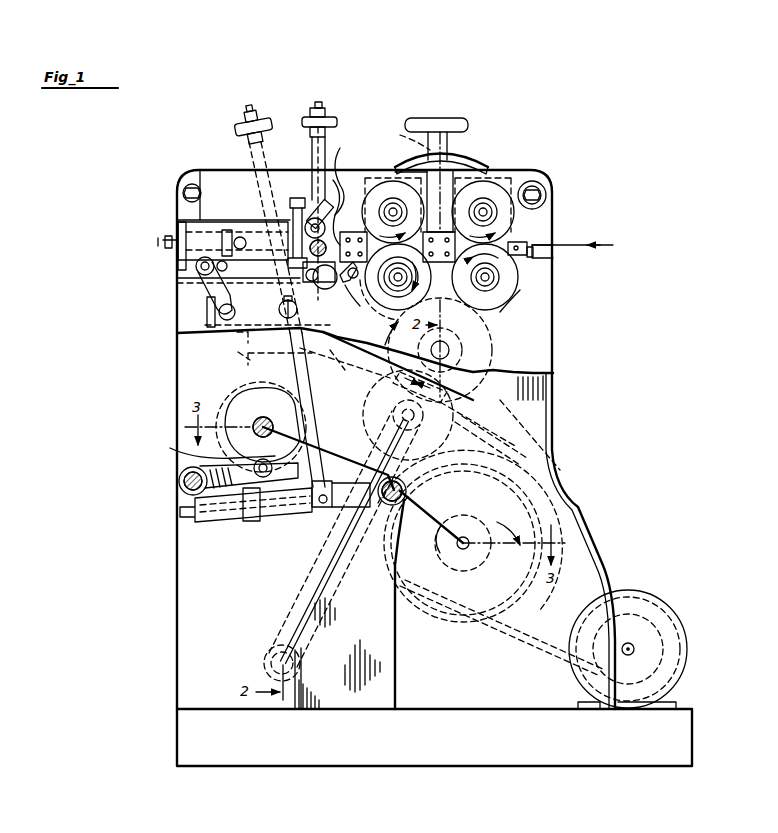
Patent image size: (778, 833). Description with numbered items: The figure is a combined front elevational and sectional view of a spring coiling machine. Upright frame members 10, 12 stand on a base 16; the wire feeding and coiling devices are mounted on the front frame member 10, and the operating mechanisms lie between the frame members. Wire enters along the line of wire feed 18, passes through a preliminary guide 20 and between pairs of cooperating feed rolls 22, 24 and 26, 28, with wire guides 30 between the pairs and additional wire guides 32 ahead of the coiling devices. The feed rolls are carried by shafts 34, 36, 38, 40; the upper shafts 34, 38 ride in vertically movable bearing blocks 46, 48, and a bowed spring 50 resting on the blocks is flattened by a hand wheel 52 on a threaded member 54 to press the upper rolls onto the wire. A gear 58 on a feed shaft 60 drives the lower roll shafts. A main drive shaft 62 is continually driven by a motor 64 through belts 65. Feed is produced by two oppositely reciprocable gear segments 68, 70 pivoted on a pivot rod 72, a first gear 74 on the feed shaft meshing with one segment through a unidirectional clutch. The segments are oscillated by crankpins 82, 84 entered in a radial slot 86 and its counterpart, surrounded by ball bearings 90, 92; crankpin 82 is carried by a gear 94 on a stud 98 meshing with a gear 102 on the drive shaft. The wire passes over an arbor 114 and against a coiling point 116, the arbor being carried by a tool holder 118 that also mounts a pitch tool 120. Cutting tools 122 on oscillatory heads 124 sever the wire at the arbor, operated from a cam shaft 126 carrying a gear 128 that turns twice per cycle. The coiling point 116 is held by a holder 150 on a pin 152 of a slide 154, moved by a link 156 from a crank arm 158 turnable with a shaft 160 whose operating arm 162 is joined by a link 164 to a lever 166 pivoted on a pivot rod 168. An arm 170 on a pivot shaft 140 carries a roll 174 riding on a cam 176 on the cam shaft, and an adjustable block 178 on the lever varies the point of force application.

The front frame member 10 is at (553, 353).
The frame member 12 is at (177, 600).
The base 16 is at (177, 734).
The line of wire feed 18 is at (573, 246).
The preliminary guide 20 is at (532, 256).
The feed roll 22 is at (535, 210).
The feed roll 24 is at (520, 290).
The feed roll 26 is at (345, 178).
The feed roll 28 is at (379, 312).
The wire guides 30 is at (440, 182).
The wire guides 32 is at (345, 228).
The shaft 34 is at (487, 200).
The shaft 36 is at (487, 285).
The shaft 38 is at (397, 200).
The shaft 40 is at (402, 265).
The bearing block 46 is at (495, 170).
The bearing block 48 is at (397, 170).
The bowed spring 50 is at (462, 160).
The hand wheel 52 is at (452, 118).
The threaded member 54 is at (400, 135).
The gear 58 is at (492, 340).
The feed shaft 60 is at (450, 344).
The main drive shaft 62 is at (480, 560).
The motor 64 is at (655, 620).
The belts 65 is at (610, 590).
The first gear segment 68 is at (585, 503).
The second gear segment 70 is at (262, 388).
The pivot rod 72 is at (302, 680).
The first gear 74 is at (470, 350).
The crankpin 82 is at (382, 560).
The crankpin 84 is at (392, 416).
The radial slot 86 is at (412, 486).
The ball bearing 90 is at (350, 596).
The ball bearing 92 is at (390, 404).
The gear 94 is at (465, 445).
The stud 98 is at (375, 440).
The gear 102 is at (448, 578).
The arbor 114 is at (305, 200).
The coiling point 116 is at (262, 225).
The tool holder 118 is at (338, 210).
The pitch tool 120 is at (325, 287).
The cutting tools 122 is at (296, 185).
The oscillatory heads 124 is at (355, 229).
The cam shaft 126 is at (263, 418).
The gear 128 is at (242, 385).
The pivot shaft 140 is at (178, 483).
The holder 150 is at (257, 222).
The pin 152 is at (200, 222).
The slide 154 is at (186, 258).
The link 156 is at (205, 275).
The crank arm 158 is at (207, 305).
The shaft 160 is at (222, 340).
The operating arm 162 is at (223, 357).
The link 164 is at (280, 357).
The lever 166 is at (242, 524).
The pivot rod 168 is at (422, 552).
The arm 170 is at (190, 464).
The roll 174 is at (205, 446).
The cam 176 is at (235, 406).
The adjustable block 178 is at (258, 519).